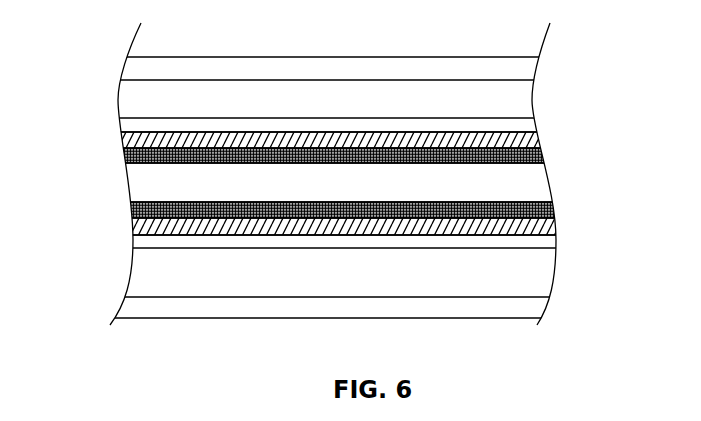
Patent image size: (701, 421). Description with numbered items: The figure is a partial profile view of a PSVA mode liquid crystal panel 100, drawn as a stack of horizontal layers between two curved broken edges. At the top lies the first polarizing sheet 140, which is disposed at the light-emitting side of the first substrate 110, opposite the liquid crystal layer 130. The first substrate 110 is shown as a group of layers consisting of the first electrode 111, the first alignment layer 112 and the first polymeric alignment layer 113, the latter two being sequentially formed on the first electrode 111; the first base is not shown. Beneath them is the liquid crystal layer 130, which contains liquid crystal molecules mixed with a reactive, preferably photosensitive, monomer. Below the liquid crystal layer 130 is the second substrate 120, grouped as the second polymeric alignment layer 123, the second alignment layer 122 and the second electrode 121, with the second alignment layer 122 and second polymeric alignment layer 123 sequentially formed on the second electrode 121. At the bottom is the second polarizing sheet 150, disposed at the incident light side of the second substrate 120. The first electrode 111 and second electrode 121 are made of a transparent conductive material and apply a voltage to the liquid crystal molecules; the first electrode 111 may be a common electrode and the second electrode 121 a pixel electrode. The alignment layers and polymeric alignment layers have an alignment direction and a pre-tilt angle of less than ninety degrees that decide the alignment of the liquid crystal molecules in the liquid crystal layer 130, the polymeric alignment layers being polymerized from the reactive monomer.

The liquid crystal panel 100 is at (85, 220).
The first substrate 110 is at (381, 124).
The first electrode 111 is at (535, 122).
The first alignment layer 112 is at (537, 135).
The first polymeric alignment layer 113 is at (354, 151).
The second substrate 120 is at (385, 235).
The second electrode 121 is at (361, 255).
The second alignment layer 122 is at (546, 230).
The second polymeric alignment layer 123 is at (548, 219).
The liquid crystal layer 130 is at (514, 183).
The first polarizing sheet 140 is at (533, 70).
The second polarizing sheet 150 is at (514, 307).